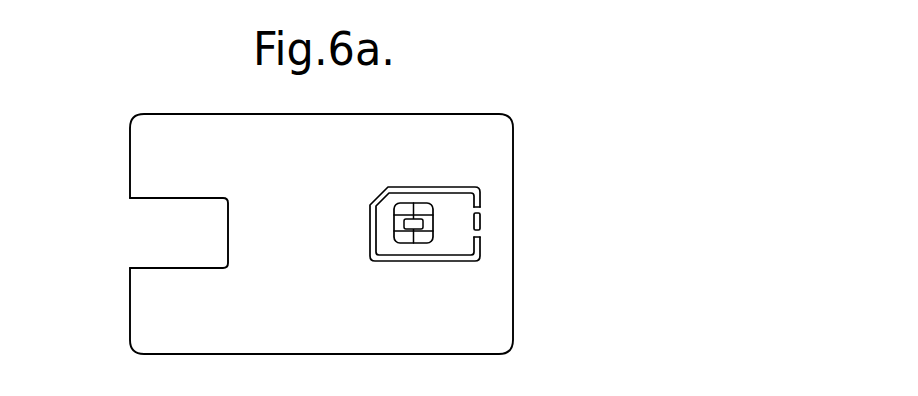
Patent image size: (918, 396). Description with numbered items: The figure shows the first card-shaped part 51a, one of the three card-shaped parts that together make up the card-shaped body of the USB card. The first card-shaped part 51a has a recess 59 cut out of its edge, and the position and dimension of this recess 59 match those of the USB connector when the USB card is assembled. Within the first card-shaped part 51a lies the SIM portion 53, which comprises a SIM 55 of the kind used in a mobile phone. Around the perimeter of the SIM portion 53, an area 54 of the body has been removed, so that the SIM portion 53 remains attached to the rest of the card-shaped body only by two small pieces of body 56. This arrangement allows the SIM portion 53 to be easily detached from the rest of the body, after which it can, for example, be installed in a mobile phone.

The first card-shaped part 51a is at (167, 144).
The recess 59 is at (167, 239).
The SIM portion 53 is at (457, 200).
The removed area 54 is at (443, 259).
The SIM 55 is at (393, 238).
The small pieces of body 56 is at (481, 234).